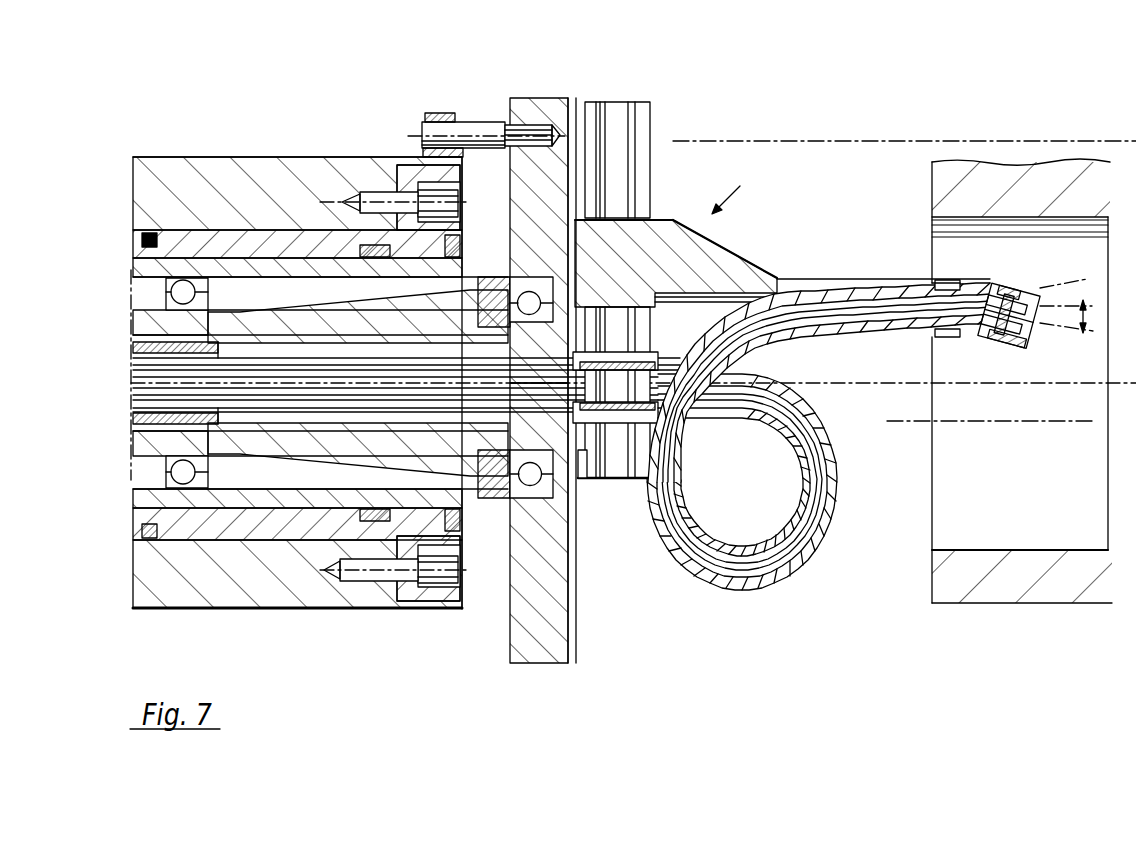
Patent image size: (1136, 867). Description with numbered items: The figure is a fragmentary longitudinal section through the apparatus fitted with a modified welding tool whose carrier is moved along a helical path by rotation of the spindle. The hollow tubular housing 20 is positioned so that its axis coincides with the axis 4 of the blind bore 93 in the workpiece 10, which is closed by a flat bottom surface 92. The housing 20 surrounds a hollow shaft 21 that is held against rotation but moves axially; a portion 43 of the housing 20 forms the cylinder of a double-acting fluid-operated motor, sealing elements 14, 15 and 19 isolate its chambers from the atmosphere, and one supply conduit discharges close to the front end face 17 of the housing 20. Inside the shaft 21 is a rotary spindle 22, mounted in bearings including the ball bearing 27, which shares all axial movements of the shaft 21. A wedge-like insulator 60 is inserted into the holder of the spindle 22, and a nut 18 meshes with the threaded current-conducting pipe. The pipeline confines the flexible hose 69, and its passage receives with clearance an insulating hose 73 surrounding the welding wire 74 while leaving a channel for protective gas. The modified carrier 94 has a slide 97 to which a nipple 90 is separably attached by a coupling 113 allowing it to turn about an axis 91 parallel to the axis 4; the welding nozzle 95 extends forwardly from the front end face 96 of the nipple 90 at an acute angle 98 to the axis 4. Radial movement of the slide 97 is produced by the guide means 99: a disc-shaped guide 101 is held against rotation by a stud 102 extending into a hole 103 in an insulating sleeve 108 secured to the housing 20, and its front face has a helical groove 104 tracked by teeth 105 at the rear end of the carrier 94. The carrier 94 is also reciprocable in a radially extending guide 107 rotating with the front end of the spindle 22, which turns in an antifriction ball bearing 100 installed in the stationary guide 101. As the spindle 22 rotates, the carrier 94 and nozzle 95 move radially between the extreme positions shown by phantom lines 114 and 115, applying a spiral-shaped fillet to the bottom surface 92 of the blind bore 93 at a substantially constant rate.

The axis 4 is at (880, 386).
The workpiece 10 is at (990, 598).
The sealing element 14 is at (149, 540).
The sealing element 15 is at (368, 500).
The front end face 17 is at (465, 606).
The nut 18 is at (205, 343).
The sealing element 19 is at (428, 545).
The housing 20 is at (300, 158).
The hollow shaft 21 is at (250, 497).
The spindle 22 is at (303, 470).
The ball bearing 27 is at (185, 480).
The cylinder 43 is at (320, 592).
The insulator 60 is at (408, 580).
The flexible hose 69 is at (693, 558).
The flexible hose 73 is at (757, 555).
The welding wire 74 is at (803, 552).
The nipple 90 is at (972, 282).
The axis 91 is at (750, 280).
The bottom surface 92 is at (1080, 598).
The blind bore 93 is at (960, 518).
The carrier 94 is at (737, 183).
The welding nozzle 95 is at (1032, 342).
The front end face 96 is at (1006, 290).
The slide 97 is at (815, 282).
The acute angle 98 is at (1068, 345).
The guide means 99 is at (596, 488).
The antifriction ball bearing 100 is at (557, 474).
The coupling member 101 is at (560, 630).
The stud 102 is at (468, 132).
The hole 103 is at (440, 112).
The helical groove 104 is at (568, 112).
The teeth 105 is at (580, 225).
The guide 107 is at (615, 138).
The sleeve 108 is at (428, 118).
The coupling 113 is at (932, 280).
The phantom line 114 is at (898, 141).
The phantom line 115 is at (920, 421).